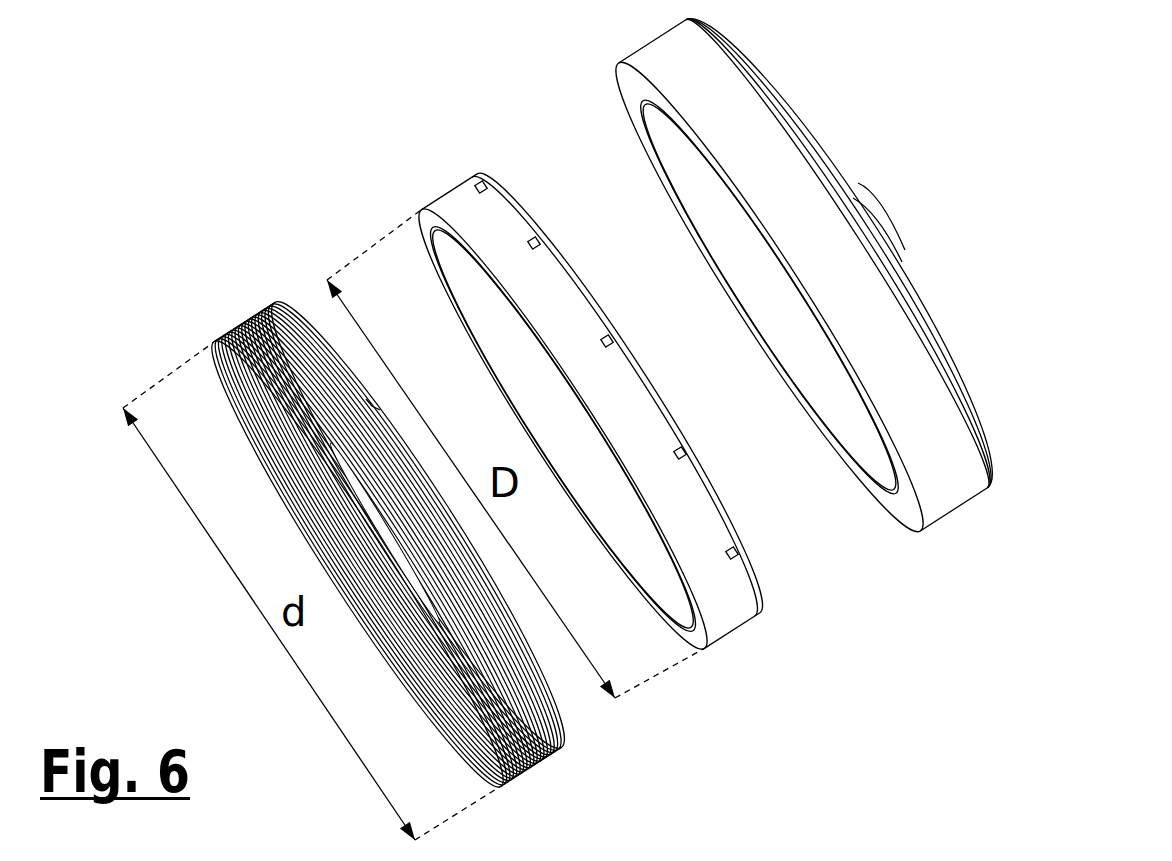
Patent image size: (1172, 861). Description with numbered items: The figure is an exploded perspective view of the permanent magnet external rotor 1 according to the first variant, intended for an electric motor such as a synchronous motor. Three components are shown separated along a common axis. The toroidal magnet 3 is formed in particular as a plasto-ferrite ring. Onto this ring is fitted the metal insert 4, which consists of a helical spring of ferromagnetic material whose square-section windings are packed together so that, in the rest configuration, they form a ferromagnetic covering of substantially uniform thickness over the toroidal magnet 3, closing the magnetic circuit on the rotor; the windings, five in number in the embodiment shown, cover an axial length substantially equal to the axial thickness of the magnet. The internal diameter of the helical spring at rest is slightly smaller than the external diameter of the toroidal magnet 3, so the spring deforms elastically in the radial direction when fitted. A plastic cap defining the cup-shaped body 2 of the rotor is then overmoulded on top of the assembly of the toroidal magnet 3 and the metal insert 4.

The permanent magnet external rotor 1 is at (968, 130).
The cup-shaped body 2 is at (912, 380).
The toroidal magnet 3 is at (470, 213).
The metal insert 4 is at (247, 312).